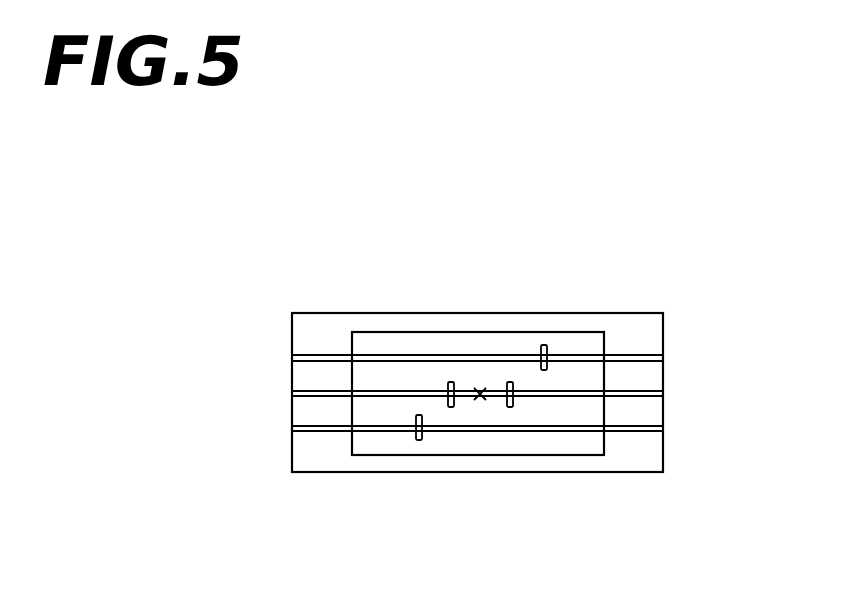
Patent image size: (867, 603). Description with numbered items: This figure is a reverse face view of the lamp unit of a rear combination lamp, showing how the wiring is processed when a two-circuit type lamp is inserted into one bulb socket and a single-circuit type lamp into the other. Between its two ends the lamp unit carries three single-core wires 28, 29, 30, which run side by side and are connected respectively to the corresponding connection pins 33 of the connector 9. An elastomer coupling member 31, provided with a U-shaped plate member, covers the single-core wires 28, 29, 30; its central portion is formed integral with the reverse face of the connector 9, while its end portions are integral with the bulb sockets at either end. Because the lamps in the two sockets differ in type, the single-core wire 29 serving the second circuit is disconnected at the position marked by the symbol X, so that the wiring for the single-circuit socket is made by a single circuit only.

The connector 9 is at (562, 332).
The single-core wire 28 is at (638, 355).
The single-core wire 29 is at (638, 392).
The single-core wire 30 is at (638, 430).
The coupling member 31 is at (565, 473).
The connection pins 33 is at (510, 382).